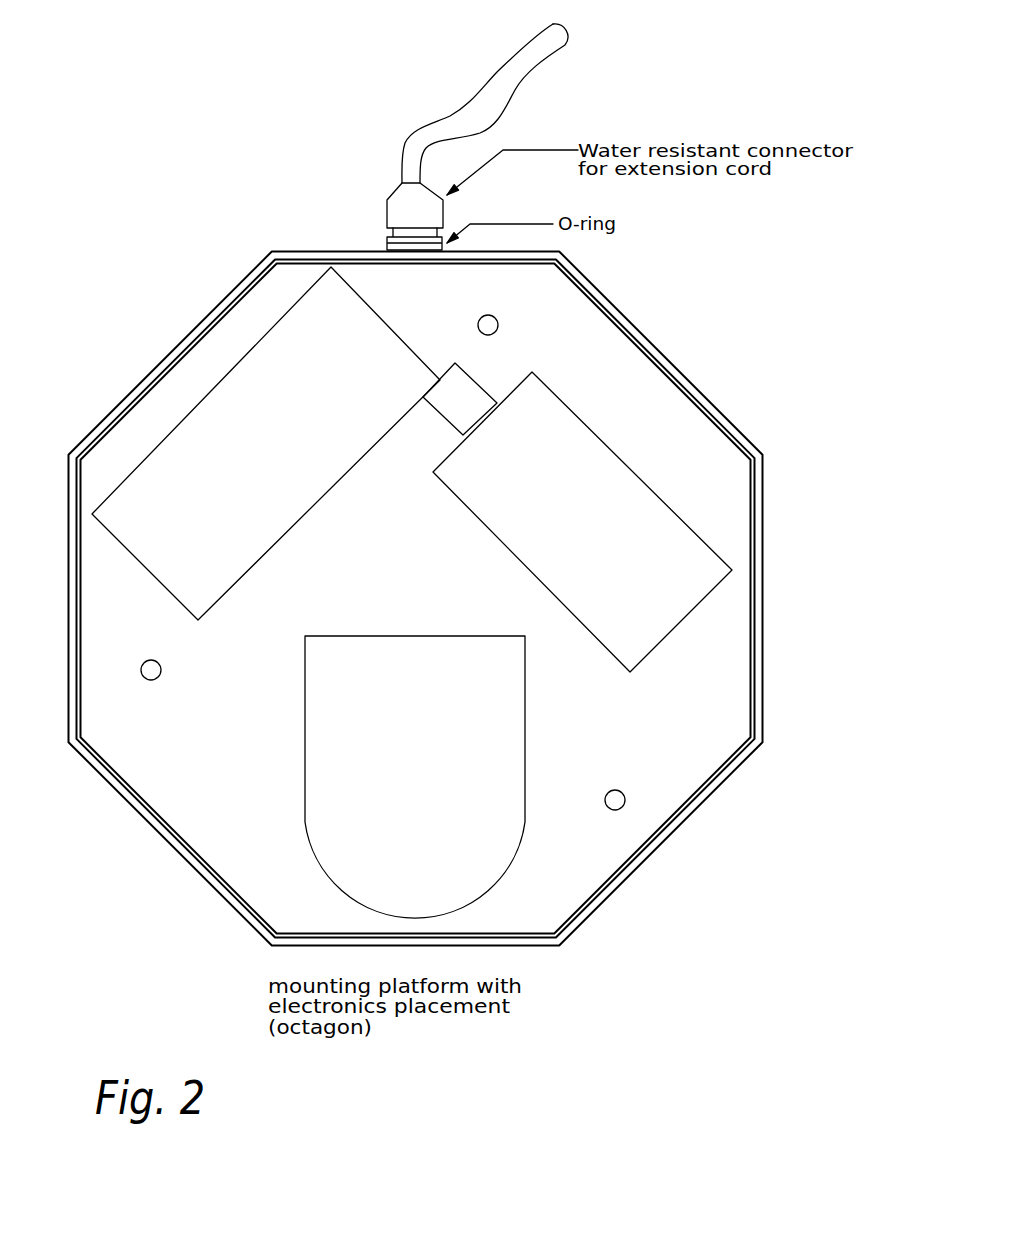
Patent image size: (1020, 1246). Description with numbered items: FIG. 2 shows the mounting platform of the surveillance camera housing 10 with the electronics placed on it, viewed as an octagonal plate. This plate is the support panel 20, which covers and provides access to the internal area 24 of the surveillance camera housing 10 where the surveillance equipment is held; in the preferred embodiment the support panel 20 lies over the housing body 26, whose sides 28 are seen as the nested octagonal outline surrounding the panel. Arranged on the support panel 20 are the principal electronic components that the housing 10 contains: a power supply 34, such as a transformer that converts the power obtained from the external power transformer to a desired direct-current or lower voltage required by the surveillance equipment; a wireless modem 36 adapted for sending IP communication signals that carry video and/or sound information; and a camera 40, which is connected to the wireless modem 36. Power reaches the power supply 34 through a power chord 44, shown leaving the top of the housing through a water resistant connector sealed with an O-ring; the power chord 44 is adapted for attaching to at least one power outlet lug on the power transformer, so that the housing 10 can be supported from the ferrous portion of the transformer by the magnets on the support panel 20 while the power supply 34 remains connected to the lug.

The surveillance camera housing 10 is at (155, 828).
The support panel 20 is at (240, 744).
The internal area 24 is at (598, 860).
The housing body 26 is at (760, 652).
The sides 28 is at (690, 394).
The power supply 34 is at (679, 591).
The wireless modem 36 is at (364, 421).
The camera 40 is at (453, 846).
The power chord 44 is at (419, 122).